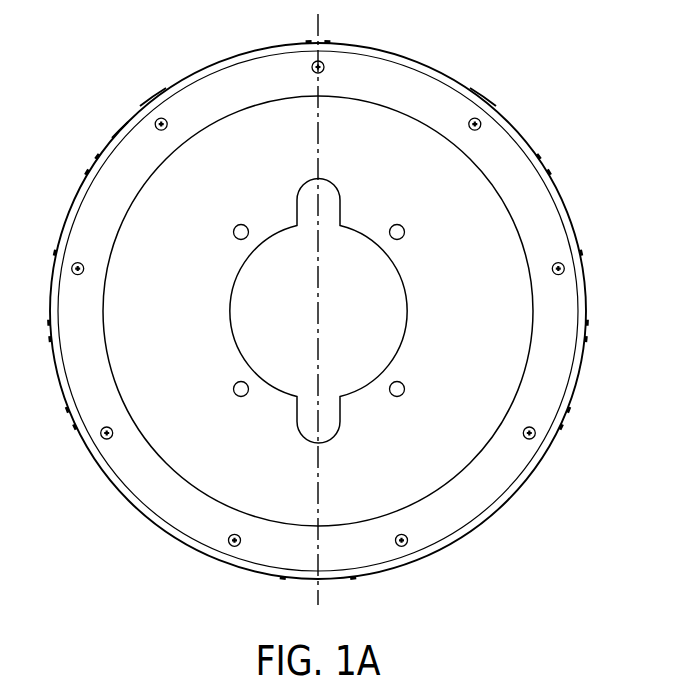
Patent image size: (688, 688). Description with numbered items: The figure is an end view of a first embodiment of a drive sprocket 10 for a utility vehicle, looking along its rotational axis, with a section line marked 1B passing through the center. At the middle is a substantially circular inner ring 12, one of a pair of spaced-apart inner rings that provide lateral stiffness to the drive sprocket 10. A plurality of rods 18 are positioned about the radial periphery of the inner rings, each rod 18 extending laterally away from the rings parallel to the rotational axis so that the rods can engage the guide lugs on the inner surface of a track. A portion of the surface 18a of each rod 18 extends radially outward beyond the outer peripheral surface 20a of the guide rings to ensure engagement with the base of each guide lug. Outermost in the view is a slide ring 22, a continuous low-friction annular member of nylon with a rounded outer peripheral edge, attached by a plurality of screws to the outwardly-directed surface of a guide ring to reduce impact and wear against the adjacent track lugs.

The drive sprocket 10 is at (325, 312).
The inner ring 12 is at (470, 366).
The rod 18 is at (492, 102).
The surface of the rods 18a is at (145, 103).
The outer peripheral surface of the guide rings 20a is at (120, 130).
The slide ring 22 is at (547, 213).
The section line 1B is at (318, 14).